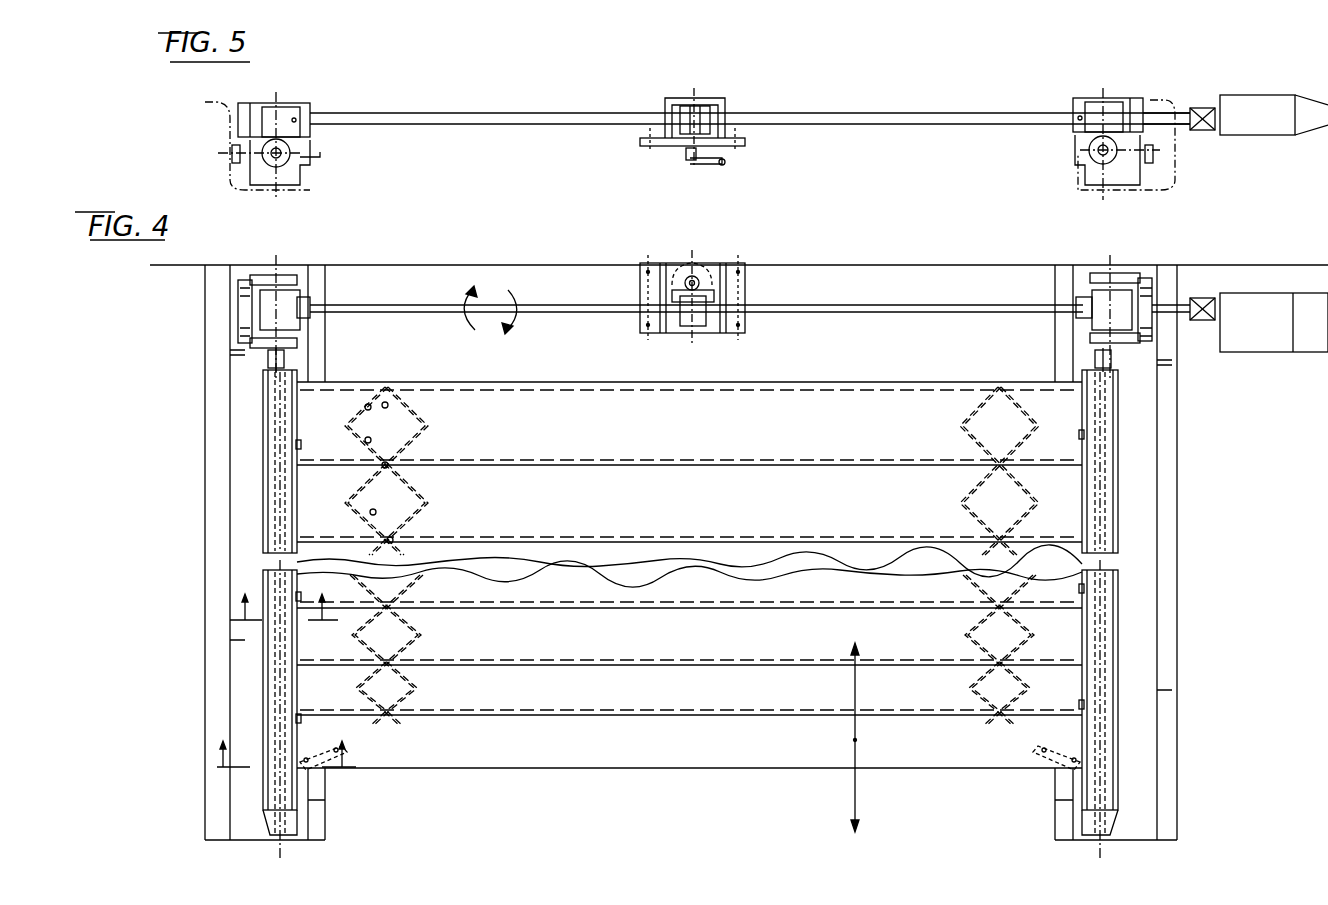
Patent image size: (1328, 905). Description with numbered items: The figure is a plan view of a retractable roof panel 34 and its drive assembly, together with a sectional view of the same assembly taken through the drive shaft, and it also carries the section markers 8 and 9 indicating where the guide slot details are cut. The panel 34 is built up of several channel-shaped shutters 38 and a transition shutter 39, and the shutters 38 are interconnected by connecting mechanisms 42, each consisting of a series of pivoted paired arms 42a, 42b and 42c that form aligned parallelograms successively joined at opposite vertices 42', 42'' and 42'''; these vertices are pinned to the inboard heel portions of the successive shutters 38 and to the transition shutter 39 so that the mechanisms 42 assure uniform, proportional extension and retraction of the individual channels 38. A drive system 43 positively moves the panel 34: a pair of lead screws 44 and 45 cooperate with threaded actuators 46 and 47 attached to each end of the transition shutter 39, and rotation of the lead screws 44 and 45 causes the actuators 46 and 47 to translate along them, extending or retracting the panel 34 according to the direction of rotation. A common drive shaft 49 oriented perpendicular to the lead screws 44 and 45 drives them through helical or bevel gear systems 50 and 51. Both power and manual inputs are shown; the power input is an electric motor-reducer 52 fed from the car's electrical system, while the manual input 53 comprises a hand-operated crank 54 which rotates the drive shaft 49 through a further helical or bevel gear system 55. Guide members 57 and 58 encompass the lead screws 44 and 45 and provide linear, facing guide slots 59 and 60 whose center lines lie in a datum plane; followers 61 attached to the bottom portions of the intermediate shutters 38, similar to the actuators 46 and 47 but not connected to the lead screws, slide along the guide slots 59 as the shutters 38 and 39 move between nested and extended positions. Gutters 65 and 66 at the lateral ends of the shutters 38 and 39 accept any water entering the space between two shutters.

In FIG. 4, the roof panel 34 is at (740, 776).
In FIG. 4, the shutters 38 is at (642, 492).
In FIG. 4, the transition shutter 39 is at (552, 756).
In FIG. 4, the connecting mechanisms 42 is at (695, 537).
In FIG. 4, the vertex 42' is at (378, 381).
In FIG. 4, the arm 42a is at (366, 408).
In FIG. 4, the arm 42b is at (366, 441).
In FIG. 4, the vertex 42'' is at (428, 479).
In FIG. 4, the arm 42c is at (374, 513).
In FIG. 4, the vertex 42''' is at (441, 523).
In FIG. 5, the drive system 43 is at (554, 100).
In FIG. 4, the drive system 43 is at (574, 292).
In FIG. 5, the lead screw 44 is at (277, 160).
In FIG. 4, the lead screw 44 is at (276, 498).
In FIG. 5, the lead screw 45 is at (1106, 160).
In FIG. 4, the lead screw 45 is at (1106, 490).
In FIG. 4, the threaded actuator 46 is at (292, 758).
In FIG. 4, the threaded actuator 47 is at (1100, 752).
In FIG. 5, the common drive shaft 49 is at (918, 122).
In FIG. 4, the common drive shaft 49 is at (922, 306).
In FIG. 5, the gear system 50 is at (285, 117).
In FIG. 4, the gear system 50 is at (312, 304).
In FIG. 5, the gear system 51 is at (1076, 118).
In FIG. 4, the gear system 51 is at (1086, 292).
In FIG. 5, the electric motor-reducer 52 is at (1262, 124).
In FIG. 4, the electric motor-reducer 52 is at (1266, 300).
In FIG. 5, the manual input 53 is at (650, 150).
In FIG. 4, the manual input 53 is at (640, 270).
In FIG. 5, the hand-operated crank 54 is at (706, 160).
In FIG. 4, the hand-operated crank 54 is at (704, 262).
In FIG. 5, the gear system 55 is at (679, 100).
In FIG. 4, the gear system 55 is at (692, 278).
In FIG. 4, the guide member 57 is at (272, 668).
In FIG. 4, the guide member 58 is at (1106, 632).
In FIG. 4, the guide slot 59 is at (293, 806).
In FIG. 4, the guide slot 60 is at (1086, 800).
In FIG. 4, the follower 61 is at (290, 445).
In FIG. 5, the gutter 65 is at (226, 140).
In FIG. 4, the gutter 65 is at (208, 507).
In FIG. 5, the gutter 66 is at (1152, 176).
In FIG. 4, the gutter 66 is at (1180, 548).
In FIG. 4, the section line 8- 8 is at (283, 771).
In FIG. 4, the section line 9- 9 is at (284, 623).